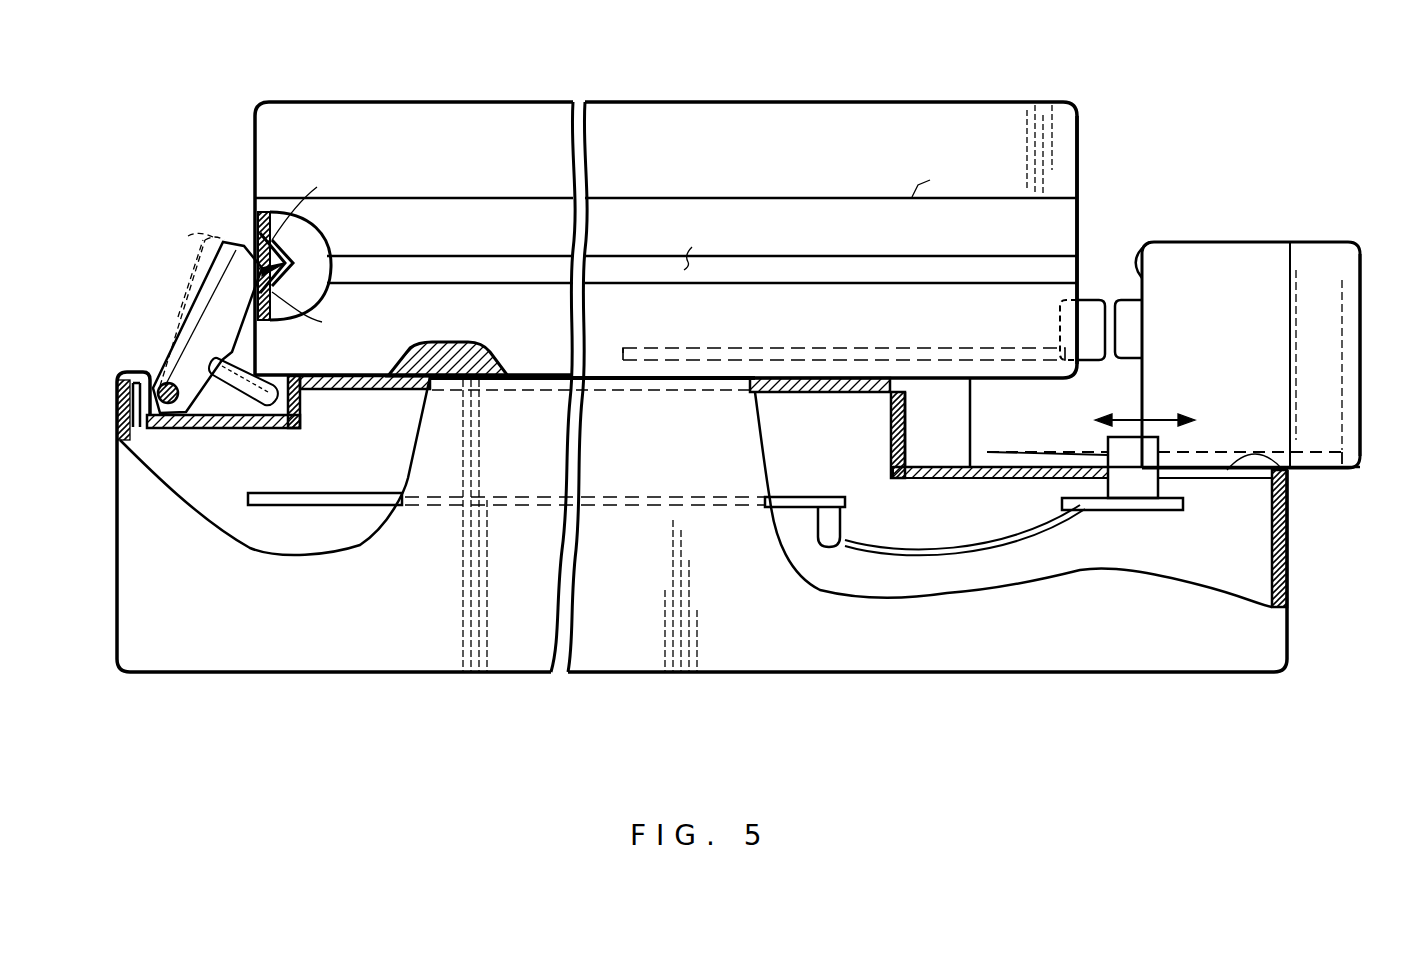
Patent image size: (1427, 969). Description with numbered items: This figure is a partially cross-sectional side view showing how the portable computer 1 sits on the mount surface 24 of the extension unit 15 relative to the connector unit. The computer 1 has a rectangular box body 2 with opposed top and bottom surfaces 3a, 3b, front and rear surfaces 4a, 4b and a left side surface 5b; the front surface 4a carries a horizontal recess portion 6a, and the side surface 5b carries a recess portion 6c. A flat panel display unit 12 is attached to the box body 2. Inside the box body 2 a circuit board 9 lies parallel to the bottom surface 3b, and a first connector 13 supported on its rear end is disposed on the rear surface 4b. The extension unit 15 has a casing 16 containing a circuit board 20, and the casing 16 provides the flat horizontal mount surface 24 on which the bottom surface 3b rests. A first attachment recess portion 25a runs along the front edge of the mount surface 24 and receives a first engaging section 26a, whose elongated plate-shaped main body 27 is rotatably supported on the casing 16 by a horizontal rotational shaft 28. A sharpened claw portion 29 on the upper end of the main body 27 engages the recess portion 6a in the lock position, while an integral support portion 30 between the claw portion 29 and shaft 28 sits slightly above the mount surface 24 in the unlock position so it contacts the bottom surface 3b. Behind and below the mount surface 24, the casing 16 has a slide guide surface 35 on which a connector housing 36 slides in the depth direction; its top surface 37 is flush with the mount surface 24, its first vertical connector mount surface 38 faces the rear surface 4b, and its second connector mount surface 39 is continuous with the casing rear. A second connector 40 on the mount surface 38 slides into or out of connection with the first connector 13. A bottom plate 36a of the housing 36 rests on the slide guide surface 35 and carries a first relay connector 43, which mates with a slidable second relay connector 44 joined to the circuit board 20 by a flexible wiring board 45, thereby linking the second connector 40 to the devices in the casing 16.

The portable computer 1 is at (1088, 141).
The display unit 12 is at (706, 134).
The top surface 3a is at (933, 175).
The recess portion 6c is at (703, 243).
The rear surface 4b is at (1080, 226).
The front surface 4a is at (262, 235).
The recess portion 6a is at (303, 237).
The claw portion 29 is at (212, 238).
The main body 27 is at (187, 347).
The first engaging section 26a is at (197, 290).
The rotational shaft 28 is at (167, 403).
The first attachment recess portion 25a is at (235, 417).
The support portion 30 is at (292, 398).
The box body 2 is at (533, 364).
The bottom surface 3b is at (455, 375).
The circuit board 9 is at (880, 350).
The left side surface 5b is at (680, 360).
The first connector 13 is at (1083, 316).
The second connector 40 is at (1130, 330).
The connector housing 36 is at (1260, 258).
The first connector mount surface 38 is at (1142, 268).
The second connector mount surface 39 is at (1352, 322).
The bottom plate 36a is at (1306, 452).
The top surface 37 is at (1017, 371).
The first relay connector 43 is at (1162, 440).
The slide guide surface 35 is at (1278, 475).
The second relay connector 44 is at (1170, 494).
The flexible wiring board 45 is at (1060, 512).
The mount surface 24 is at (836, 390).
The circuit board 20 is at (300, 505).
The casing 16 is at (515, 655).
The extension unit 15 is at (657, 655).